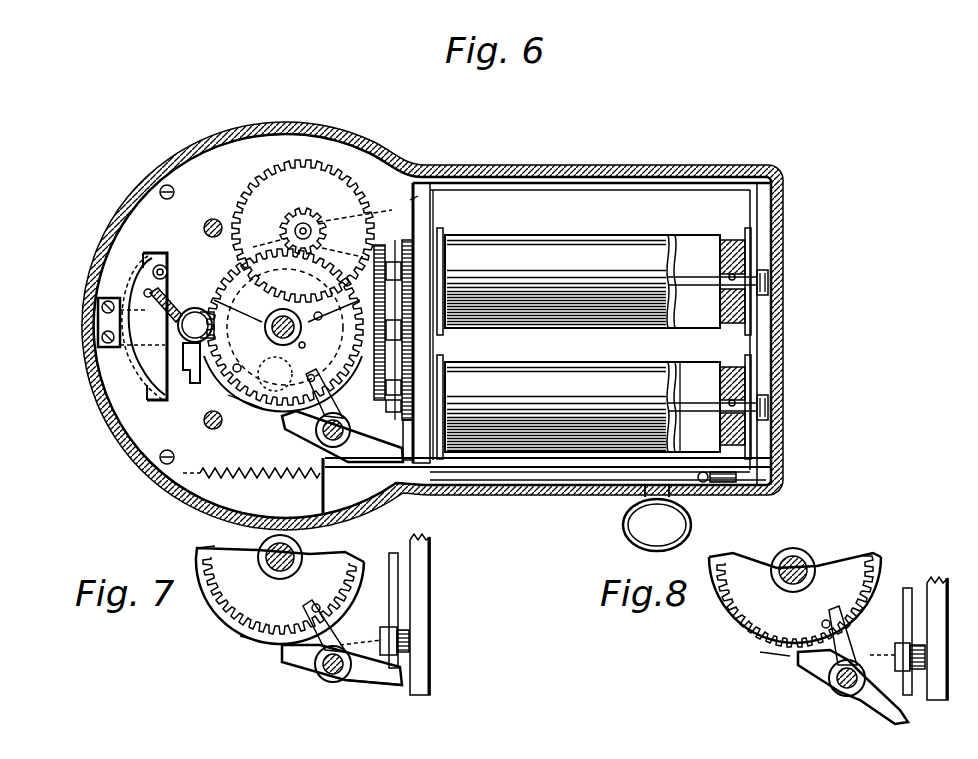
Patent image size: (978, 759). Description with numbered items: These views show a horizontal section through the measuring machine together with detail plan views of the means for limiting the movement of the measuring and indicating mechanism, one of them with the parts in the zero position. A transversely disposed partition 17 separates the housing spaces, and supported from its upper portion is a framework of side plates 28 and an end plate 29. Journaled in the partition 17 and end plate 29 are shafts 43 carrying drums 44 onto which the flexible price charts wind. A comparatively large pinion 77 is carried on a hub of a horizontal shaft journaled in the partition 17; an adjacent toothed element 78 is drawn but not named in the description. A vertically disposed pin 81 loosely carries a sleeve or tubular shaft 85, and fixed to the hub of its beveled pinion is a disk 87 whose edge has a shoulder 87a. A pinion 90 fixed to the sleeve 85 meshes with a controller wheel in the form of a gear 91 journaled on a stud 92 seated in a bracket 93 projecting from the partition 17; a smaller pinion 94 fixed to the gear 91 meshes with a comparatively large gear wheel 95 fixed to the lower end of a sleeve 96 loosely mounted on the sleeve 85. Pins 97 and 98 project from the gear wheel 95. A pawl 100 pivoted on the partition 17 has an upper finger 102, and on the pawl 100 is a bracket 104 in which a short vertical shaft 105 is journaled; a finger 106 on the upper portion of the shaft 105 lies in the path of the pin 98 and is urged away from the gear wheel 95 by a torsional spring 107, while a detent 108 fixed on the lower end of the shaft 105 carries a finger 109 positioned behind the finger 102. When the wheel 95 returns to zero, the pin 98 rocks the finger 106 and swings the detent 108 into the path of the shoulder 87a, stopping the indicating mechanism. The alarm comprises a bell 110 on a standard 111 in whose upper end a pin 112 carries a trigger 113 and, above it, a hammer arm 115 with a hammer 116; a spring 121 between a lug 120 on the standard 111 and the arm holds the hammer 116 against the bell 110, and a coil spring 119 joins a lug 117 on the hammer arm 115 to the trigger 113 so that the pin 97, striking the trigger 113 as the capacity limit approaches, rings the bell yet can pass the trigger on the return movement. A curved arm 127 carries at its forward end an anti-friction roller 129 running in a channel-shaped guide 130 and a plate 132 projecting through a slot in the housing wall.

In FIG. 6, the partition 17 is at (423, 203).
In FIG. 7, the partition 17 is at (425, 583).
In FIG. 8, the partition 17 is at (940, 603).
In FIG. 6, the side plates 28 is at (626, 183).
In FIG. 6, the end plate 29 is at (755, 340).
In FIG. 6, the shafts 43 is at (685, 410).
In FIG. 6, the drums 44 is at (602, 343).
In FIG. 6, the pinion 77 is at (387, 290).
In FIG. 6, the gear 78 is at (405, 348).
In FIG. 6, the pin 81 is at (267, 330).
In FIG. 7, the pin 81 is at (307, 552).
In FIG. 8, the pin 81 is at (801, 557).
In FIG. 6, the sleeve or tubular shaft 85 is at (265, 308).
In FIG. 7, the sleeve or tubular shaft 85 is at (260, 550).
In FIG. 8, the sleeve or tubular shaft 85 is at (791, 552).
In FIG. 6, the disk 87 is at (228, 265).
In FIG. 7, the disk 87 is at (203, 552).
In FIG. 6, the shoulder 87a is at (267, 410).
In FIG. 7, the shoulder 87a is at (255, 640).
In FIG. 8, the shoulder 87a is at (800, 653).
In FIG. 6, the pinion 90 is at (275, 374).
In FIG. 6, the controller wheel gear 91 is at (247, 197).
In FIG. 6, the stud 92 is at (300, 213).
In FIG. 6, the bracket 93 is at (414, 200).
In FIG. 6, the pinion 94 is at (313, 213).
In FIG. 6, the gear wheel 95 is at (285, 327).
In FIG. 7, the gear wheel 95 is at (232, 604).
In FIG. 8, the gear wheel 95 is at (795, 600).
In FIG. 6, the sleeve 96 is at (302, 345).
In FIG. 6, the pin or dog 97 is at (320, 319).
In FIG. 6, the pin or dog 98 is at (235, 372).
In FIG. 7, the pin or dog 98 is at (317, 604).
In FIG. 8, the pin or dog 98 is at (824, 624).
In FIG. 6, the pawl 100 is at (396, 448).
In FIG. 7, the pawl 100 is at (392, 556).
In FIG. 8, the pawl 100 is at (907, 641).
In FIG. 7, the finger 102 is at (397, 663).
In FIG. 8, the finger 102 is at (908, 683).
In FIG. 6, the bracket 104 is at (388, 412).
In FIG. 7, the shaft 105 is at (341, 643).
In FIG. 6, the finger 106 is at (325, 405).
In FIG. 7, the finger 106 is at (305, 601).
In FIG. 8, the finger 106 is at (834, 608).
In FIG. 6, the torsional spring 107 is at (333, 430).
In FIG. 7, the torsional spring 107 is at (328, 631).
In FIG. 8, the torsional spring 107 is at (848, 643).
In FIG. 6, the detent 108 is at (300, 428).
In FIG. 7, the detent 108 is at (297, 657).
In FIG. 8, the detent 108 is at (823, 665).
In FIG. 6, the finger 109 is at (370, 460).
In FIG. 7, the finger 109 is at (363, 676).
In FIG. 8, the finger 109 is at (910, 719).
In FIG. 6, the bell 110 is at (130, 273).
In FIG. 6, the standard 111 is at (100, 327).
In FIG. 6, the pin 112 is at (168, 345).
In FIG. 6, the trigger 113 is at (218, 324).
In FIG. 6, the hammer arm 115 is at (164, 303).
In FIG. 6, the hammer 116 is at (160, 268).
In FIG. 6, the lug 117 is at (180, 320).
In FIG. 6, the coil spring 119 is at (162, 333).
In FIG. 6, the lug 120 is at (190, 380).
In FIG. 6, the spring 121 is at (172, 372).
In FIG. 6, the curved arm 127 is at (487, 473).
In FIG. 6, the anti-friction roller 129 is at (712, 492).
In FIG. 6, the channel-shaped guide 130 is at (778, 490).
In FIG. 6, the plate 132 is at (657, 518).